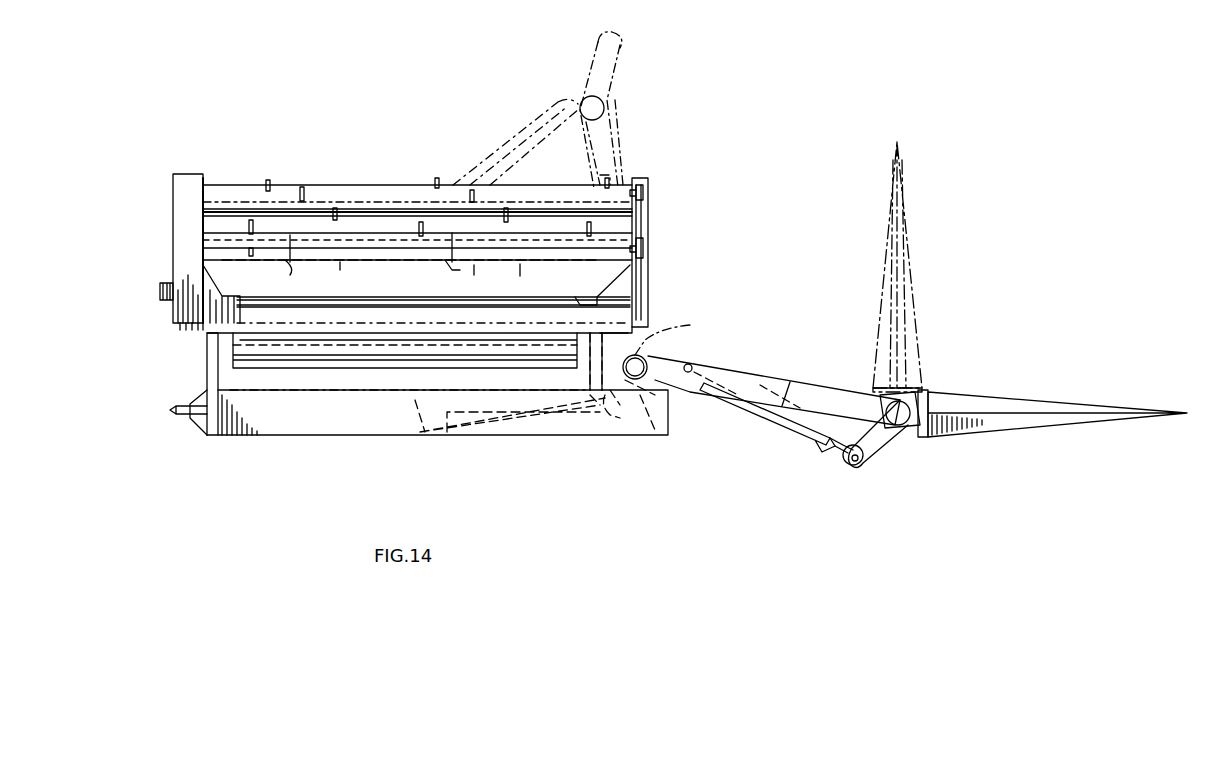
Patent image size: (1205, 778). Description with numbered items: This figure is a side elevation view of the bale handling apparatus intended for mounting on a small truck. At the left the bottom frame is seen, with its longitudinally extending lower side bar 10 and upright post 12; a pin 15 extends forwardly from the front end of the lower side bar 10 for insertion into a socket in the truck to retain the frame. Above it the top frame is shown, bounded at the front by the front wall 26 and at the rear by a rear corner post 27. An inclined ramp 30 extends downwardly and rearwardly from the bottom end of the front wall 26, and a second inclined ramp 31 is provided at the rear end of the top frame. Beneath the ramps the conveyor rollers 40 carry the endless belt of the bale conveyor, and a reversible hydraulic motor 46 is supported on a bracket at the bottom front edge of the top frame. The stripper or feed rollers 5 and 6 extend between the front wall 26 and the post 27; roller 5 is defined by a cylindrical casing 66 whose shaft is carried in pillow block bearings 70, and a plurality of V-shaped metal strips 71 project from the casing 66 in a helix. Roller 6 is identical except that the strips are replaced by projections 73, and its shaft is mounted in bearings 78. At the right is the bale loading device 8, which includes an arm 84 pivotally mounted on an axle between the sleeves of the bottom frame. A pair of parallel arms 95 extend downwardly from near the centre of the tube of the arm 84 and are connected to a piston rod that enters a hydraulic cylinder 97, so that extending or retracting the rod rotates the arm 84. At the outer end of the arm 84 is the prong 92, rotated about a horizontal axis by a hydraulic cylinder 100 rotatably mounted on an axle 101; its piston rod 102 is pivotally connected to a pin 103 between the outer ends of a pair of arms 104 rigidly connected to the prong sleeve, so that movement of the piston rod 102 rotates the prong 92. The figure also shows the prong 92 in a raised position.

The stripper or feed roller 5 is at (218, 190).
The stripper or feed roller 6 is at (388, 252).
The bale loading device 8 is at (848, 322).
The lower side bar 10 is at (320, 436).
The post 12 is at (210, 356).
The pin 15 is at (175, 409).
The front wall 26 is at (176, 236).
The rear corner post 27 is at (648, 218).
The inclined ramp 30 is at (222, 280).
The inclined ramp 31 is at (612, 278).
The conveyor roller 40 is at (388, 352).
The reversible hydraulic motor 46 is at (162, 292).
The cylindrical casing 66 is at (355, 196).
The pillow block bearing 70 is at (648, 193).
The V-shaped metal strip 71 is at (302, 188).
The projection 73 is at (360, 272).
The bearing 78 is at (648, 250).
The arm 84 is at (642, 340).
The prong 92 is at (515, 135).
The parallel arm 95 is at (636, 410).
The hydraulic cylinder 97 is at (540, 432).
The hydraulic cylinder 100 is at (768, 418).
The axle 101 is at (692, 362).
The piston rod 102 is at (840, 452).
The pin 103 is at (857, 468).
The arm 104 is at (868, 448).